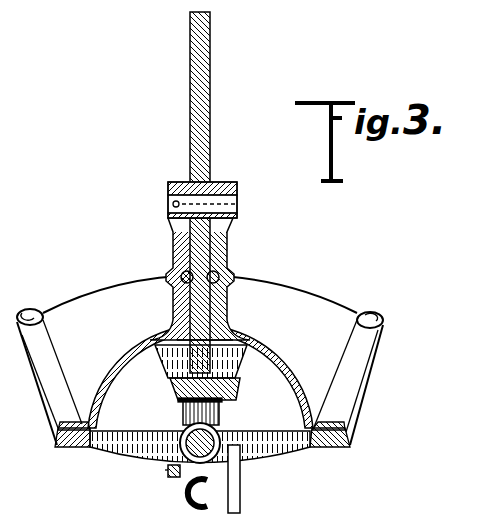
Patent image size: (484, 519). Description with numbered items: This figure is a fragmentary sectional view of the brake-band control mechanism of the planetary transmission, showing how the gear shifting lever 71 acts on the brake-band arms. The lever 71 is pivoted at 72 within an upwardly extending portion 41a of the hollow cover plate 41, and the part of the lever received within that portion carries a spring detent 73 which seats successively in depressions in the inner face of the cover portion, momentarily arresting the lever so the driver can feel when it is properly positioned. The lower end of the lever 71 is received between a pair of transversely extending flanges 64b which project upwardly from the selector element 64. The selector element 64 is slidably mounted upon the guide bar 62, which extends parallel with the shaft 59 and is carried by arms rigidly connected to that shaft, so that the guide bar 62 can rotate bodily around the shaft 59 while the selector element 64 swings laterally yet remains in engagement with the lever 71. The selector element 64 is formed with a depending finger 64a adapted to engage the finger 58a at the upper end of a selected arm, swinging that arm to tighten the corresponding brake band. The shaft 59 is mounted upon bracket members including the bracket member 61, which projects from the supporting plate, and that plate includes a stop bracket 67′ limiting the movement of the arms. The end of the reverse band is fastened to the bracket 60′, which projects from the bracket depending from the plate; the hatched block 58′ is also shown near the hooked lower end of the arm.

The lever 71 is at (196, 100).
The pivot 72 is at (238, 206).
The hollow cover plate 41 is at (333, 312).
The upwardly extending portion of the hollow cover plate 41a is at (227, 256).
The spring detent 73 is at (232, 280).
The transversely extending flanges 64b is at (250, 343).
The selector element 64 is at (170, 375).
The depending finger 64a is at (178, 394).
The guide bar 62 is at (240, 392).
The finger 58a is at (185, 418).
The bracket member 61 is at (260, 448).
The stop bracket 67′ is at (165, 470).
The block 58′ is at (176, 474).
The shaft 59 is at (240, 483).
The bracket 60′ is at (240, 506).